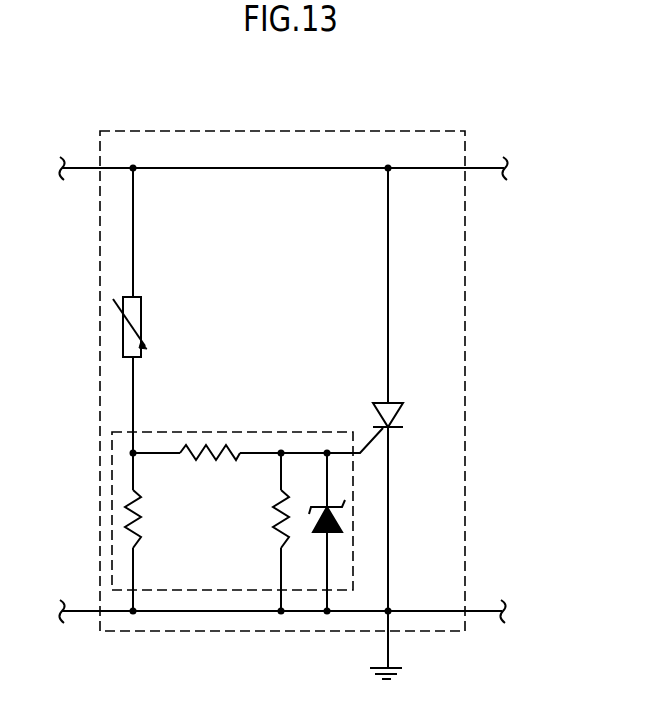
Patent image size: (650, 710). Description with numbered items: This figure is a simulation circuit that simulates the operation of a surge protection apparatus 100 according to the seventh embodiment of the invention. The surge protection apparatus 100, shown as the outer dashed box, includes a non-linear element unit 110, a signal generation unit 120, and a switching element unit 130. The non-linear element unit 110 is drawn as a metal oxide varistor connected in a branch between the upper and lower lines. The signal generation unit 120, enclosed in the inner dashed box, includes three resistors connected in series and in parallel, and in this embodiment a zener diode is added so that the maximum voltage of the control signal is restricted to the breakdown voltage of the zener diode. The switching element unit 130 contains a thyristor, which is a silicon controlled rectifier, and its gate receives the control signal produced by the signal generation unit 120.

The surge protection apparatus 100 is at (258, 132).
The non-linear element unit 110 is at (133, 297).
The signal generation unit 120 is at (220, 431).
The switching element unit 130 is at (382, 401).